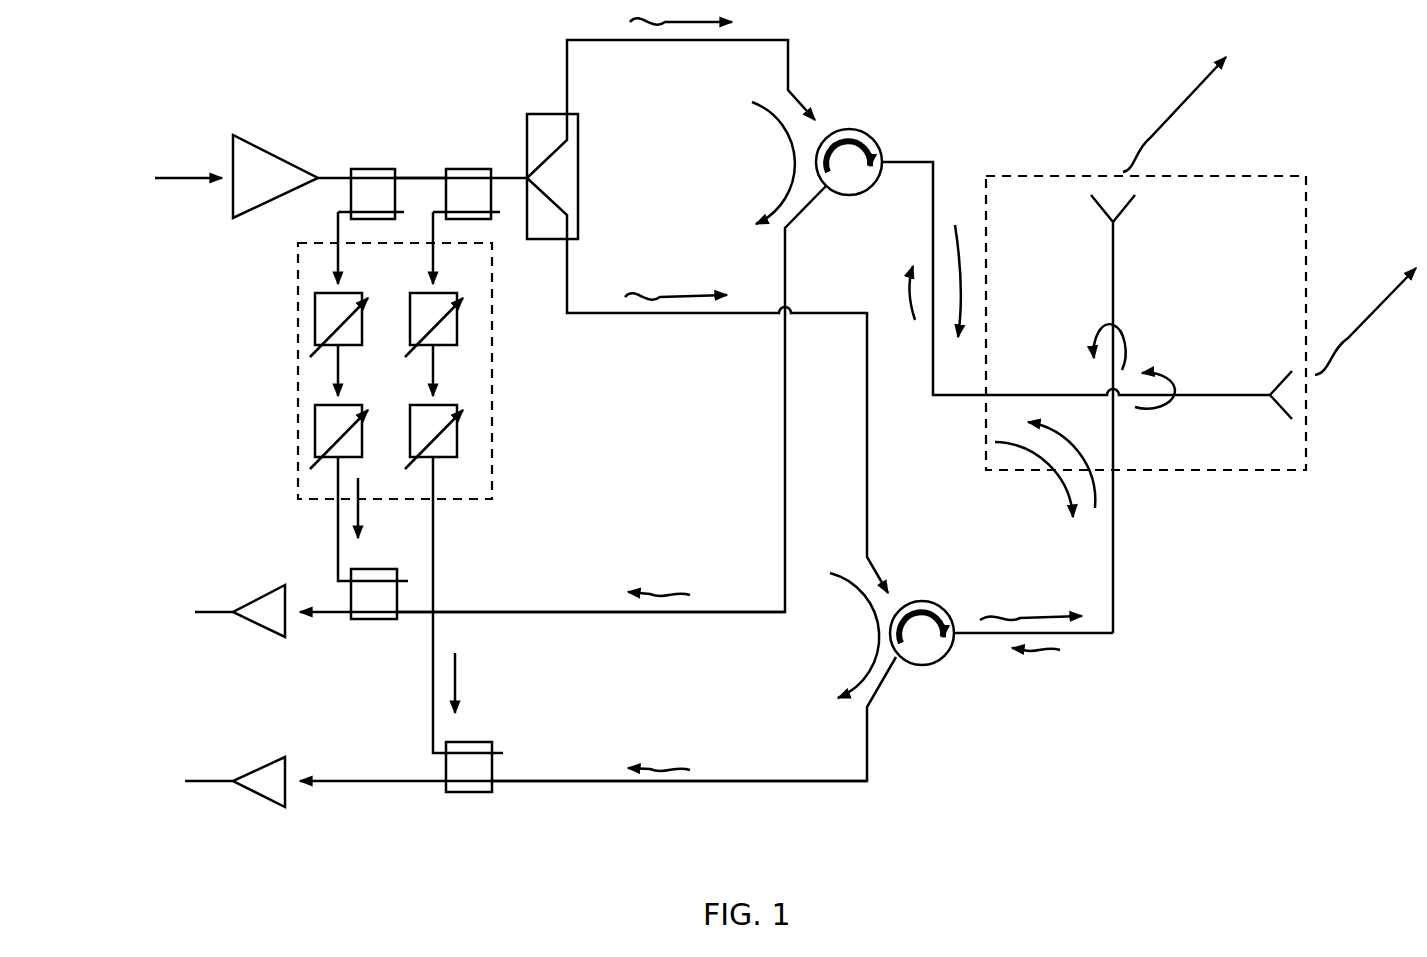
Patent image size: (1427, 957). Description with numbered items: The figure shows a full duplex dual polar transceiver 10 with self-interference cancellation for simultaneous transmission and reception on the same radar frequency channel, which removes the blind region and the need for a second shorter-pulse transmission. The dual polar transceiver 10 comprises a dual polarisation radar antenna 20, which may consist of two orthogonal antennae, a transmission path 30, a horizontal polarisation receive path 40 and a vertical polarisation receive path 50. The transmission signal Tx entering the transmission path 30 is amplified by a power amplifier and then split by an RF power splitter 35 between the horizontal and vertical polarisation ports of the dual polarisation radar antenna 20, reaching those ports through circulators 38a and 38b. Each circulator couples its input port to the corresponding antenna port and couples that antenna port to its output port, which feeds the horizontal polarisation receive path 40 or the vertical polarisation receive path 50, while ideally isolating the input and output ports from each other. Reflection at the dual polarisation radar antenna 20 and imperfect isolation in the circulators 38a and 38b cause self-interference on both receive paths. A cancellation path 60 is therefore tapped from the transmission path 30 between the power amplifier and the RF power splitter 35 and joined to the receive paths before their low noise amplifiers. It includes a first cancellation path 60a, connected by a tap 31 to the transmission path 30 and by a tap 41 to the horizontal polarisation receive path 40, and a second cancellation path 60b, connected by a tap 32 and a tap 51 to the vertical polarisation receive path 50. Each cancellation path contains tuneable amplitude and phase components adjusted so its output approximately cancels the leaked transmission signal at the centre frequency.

The dual polar transceiver 10 is at (663, 430).
The dual polarisation radar antenna 20 is at (1202, 176).
The transmission path 30 is at (412, 178).
The tap 31 is at (373, 169).
The tap 32 is at (468, 169).
The RF power splitter 35 is at (557, 175).
The circulator 38a is at (875, 133).
The circulator 38b is at (947, 662).
The horizontal polarisation receive path 40 is at (498, 612).
The tap 41 is at (375, 617).
The vertical polarisation receive path 50 is at (498, 781).
The tap 51 is at (470, 793).
The cancellation path 60 is at (298, 310).
The first cancellation path 60a is at (336, 363).
The second cancellation path 60b is at (433, 355).